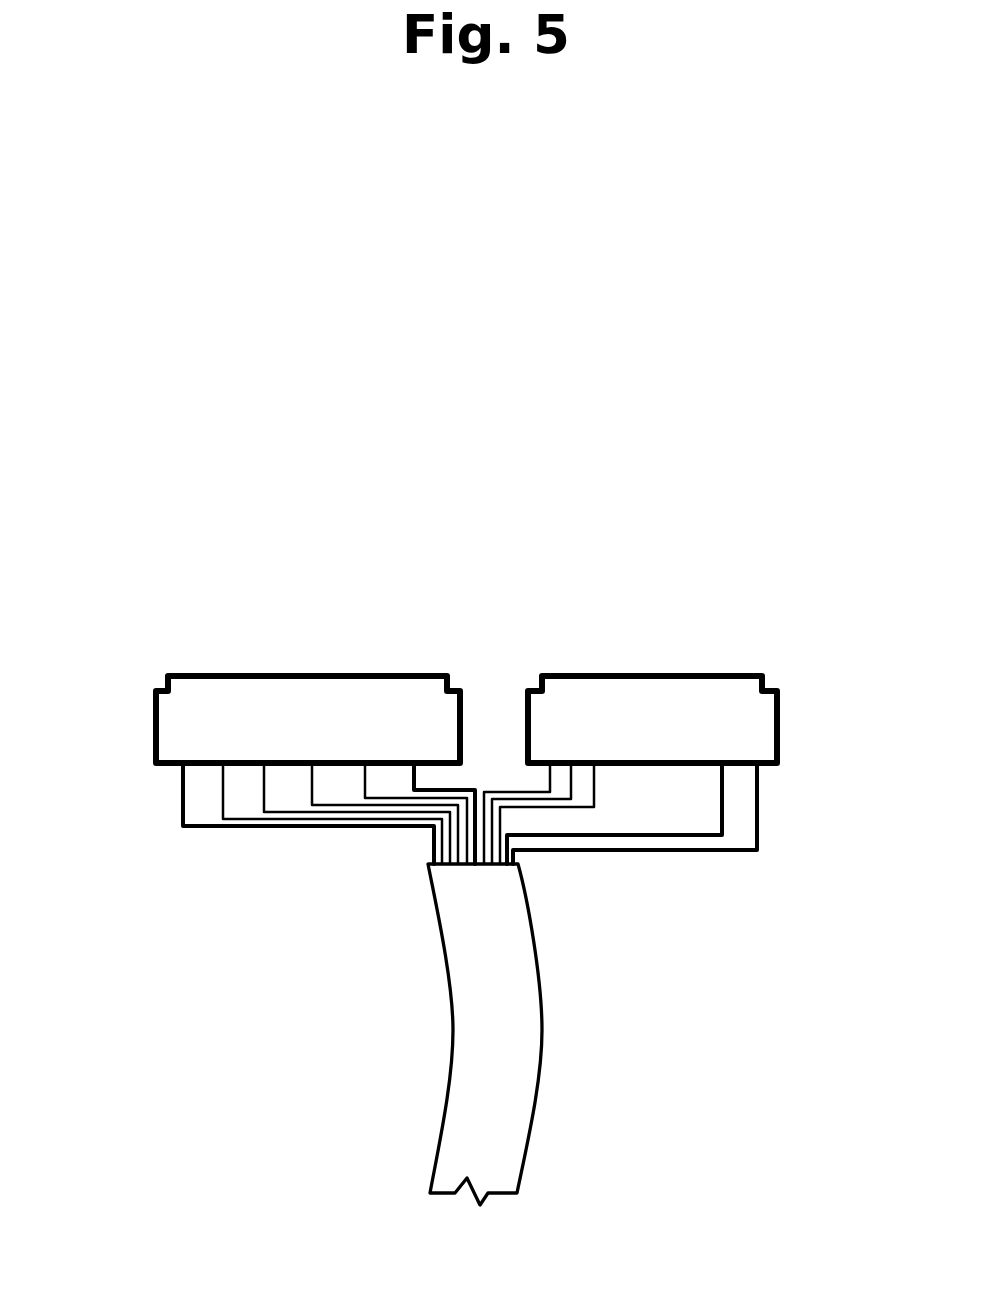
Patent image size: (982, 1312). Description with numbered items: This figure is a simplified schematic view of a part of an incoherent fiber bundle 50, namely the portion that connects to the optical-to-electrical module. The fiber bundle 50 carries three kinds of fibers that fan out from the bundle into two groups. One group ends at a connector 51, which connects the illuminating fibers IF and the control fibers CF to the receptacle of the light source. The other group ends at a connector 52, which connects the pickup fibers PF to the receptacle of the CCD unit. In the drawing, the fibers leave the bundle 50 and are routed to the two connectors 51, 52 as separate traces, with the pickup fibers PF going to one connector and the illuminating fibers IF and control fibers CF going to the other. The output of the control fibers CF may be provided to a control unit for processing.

The fiber bundle 50 is at (622, 1077).
The connector 51 is at (780, 690).
The connector 52 is at (153, 690).
The pickup fibers PF is at (183, 827).
The illuminating fibers IF is at (597, 805).
The control fibers CF is at (755, 850).